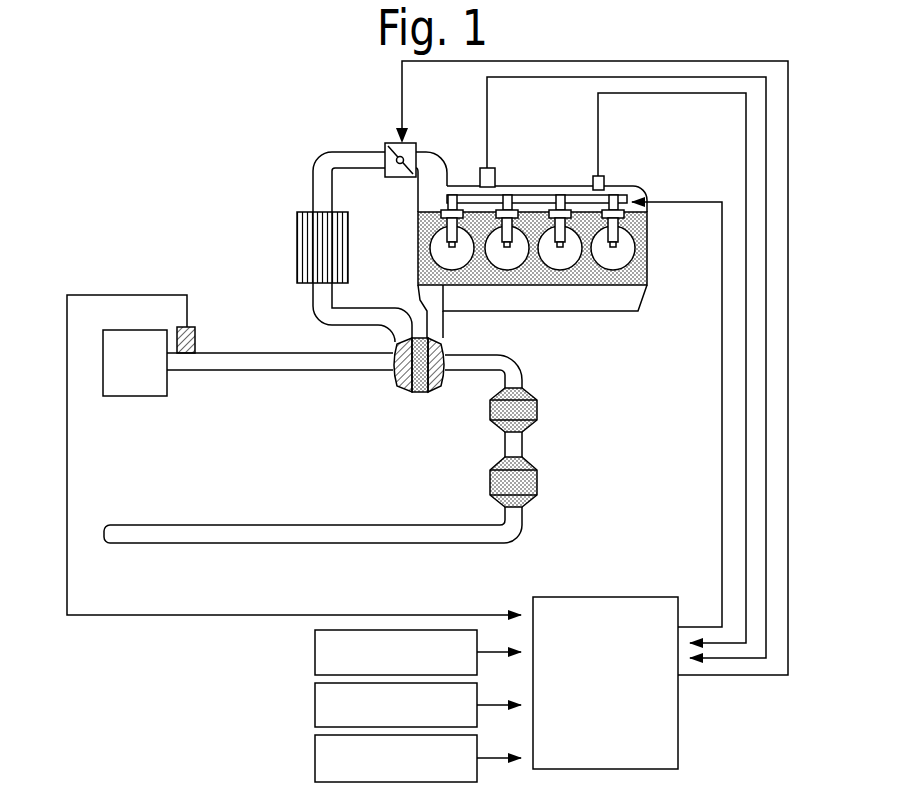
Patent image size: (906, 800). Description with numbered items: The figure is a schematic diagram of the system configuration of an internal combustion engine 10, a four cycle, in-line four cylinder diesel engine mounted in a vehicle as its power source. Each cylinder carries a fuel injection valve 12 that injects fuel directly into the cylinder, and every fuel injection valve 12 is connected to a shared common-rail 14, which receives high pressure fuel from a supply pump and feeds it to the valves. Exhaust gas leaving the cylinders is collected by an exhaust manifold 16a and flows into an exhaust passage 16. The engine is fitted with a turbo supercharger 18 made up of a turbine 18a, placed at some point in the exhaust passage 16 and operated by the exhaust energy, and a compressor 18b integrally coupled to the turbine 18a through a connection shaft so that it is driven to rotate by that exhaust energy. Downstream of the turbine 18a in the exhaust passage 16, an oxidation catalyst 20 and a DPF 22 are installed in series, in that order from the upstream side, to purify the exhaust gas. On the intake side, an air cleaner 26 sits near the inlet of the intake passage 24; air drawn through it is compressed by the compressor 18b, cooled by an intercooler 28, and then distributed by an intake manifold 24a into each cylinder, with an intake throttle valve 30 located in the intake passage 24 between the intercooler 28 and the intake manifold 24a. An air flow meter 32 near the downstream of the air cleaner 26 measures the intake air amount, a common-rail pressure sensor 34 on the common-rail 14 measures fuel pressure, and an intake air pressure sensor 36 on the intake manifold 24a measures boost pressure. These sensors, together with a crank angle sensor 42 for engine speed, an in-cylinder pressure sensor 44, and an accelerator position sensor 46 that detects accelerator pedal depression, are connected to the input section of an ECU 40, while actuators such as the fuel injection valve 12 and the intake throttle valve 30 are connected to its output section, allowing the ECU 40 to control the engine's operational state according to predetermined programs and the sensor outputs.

The internal combustion engine 10 is at (533, 259).
The fuel injection valve 12 is at (446, 227).
The common-rail 14 is at (567, 195).
The exhaust passage 16 is at (442, 328).
The exhaust manifold 16a is at (596, 313).
The turbo supercharger 18 is at (426, 405).
The turbine 18a is at (418, 402).
The compressor 18b is at (403, 393).
The oxidation catalyst 20 is at (538, 410).
The DPF (Diesel Particulate Filter) 22 is at (538, 485).
The intake passage 24 is at (356, 309).
The intake manifold 24a is at (638, 188).
The air cleaner 26 is at (120, 397).
The intercooler 28 is at (297, 248).
The intake throttle valve 30 is at (390, 144).
The air flow meter 32 is at (180, 327).
The common-rail pressure sensor 34 is at (595, 176).
The intake air pressure sensor 36 is at (481, 168).
The ECU (Electronic Control Unit) 40 is at (638, 597).
The crank angle sensor 42 is at (315, 655).
The in-cylinder pressure sensor 44 is at (315, 707).
The accelerator position sensor 46 is at (315, 760).